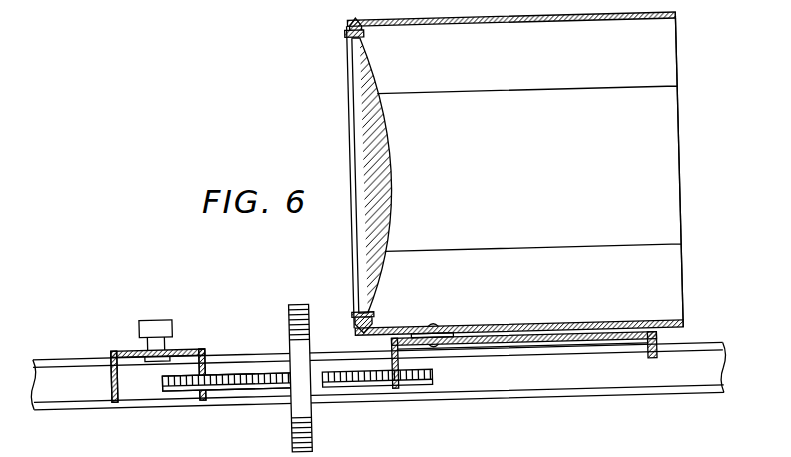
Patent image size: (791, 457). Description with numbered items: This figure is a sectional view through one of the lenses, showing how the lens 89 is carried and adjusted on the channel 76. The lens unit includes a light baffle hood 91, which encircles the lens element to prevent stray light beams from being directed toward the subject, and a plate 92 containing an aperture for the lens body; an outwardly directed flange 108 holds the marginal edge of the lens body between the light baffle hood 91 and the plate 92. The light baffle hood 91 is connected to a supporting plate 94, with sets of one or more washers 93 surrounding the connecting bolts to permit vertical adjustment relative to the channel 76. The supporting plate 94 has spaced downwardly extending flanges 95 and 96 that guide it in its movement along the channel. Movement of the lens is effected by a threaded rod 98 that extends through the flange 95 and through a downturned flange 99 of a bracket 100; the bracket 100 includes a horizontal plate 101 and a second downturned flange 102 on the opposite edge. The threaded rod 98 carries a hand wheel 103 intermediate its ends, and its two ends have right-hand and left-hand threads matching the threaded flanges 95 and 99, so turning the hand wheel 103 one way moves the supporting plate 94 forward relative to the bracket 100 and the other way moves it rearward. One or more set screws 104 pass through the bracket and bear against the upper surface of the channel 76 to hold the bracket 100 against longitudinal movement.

The channel 76 is at (719, 365).
The lens 89 is at (579, 174).
The light baffle hood 91 is at (676, 29).
The plate 92 is at (354, 20).
The washers 93 is at (597, 325).
The supporting plate 94 is at (558, 342).
The flange 95 is at (399, 387).
The flange 96 is at (651, 358).
The threaded rod 98 is at (265, 386).
The downturned flange 99 is at (200, 390).
The bracket 100 is at (126, 338).
The horizontal plate 101 is at (194, 339).
The downturned flange 102 is at (115, 390).
The hand wheel 103 is at (307, 300).
The set screws 104 is at (155, 311).
The outwardly directed flange 108 is at (352, 34).